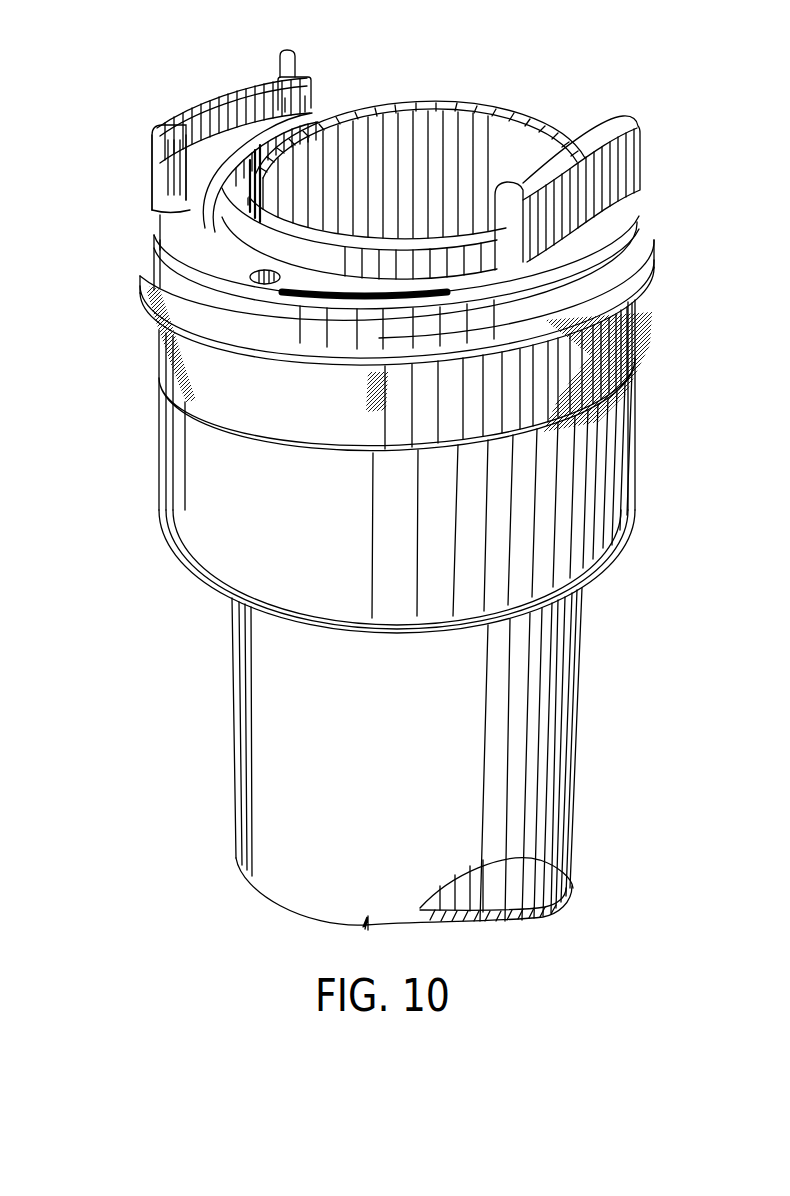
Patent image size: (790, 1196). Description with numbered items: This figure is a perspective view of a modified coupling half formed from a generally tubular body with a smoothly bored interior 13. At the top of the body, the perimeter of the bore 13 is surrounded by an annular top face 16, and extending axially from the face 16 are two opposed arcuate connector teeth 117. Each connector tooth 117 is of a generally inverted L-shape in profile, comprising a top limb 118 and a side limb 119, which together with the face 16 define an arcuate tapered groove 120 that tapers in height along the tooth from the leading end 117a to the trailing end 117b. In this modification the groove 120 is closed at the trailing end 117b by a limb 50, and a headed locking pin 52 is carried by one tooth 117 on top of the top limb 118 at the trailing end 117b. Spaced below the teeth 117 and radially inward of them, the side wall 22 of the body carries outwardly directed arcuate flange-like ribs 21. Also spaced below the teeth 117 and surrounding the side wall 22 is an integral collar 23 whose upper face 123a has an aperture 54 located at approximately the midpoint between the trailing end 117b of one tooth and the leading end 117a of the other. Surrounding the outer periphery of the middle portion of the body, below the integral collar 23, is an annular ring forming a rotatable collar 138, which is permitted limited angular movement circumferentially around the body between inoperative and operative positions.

The bore 13 is at (477, 164).
The annular top face 16 is at (450, 103).
The arcuate flange-like ribs 21 is at (157, 233).
The side wall 22 is at (440, 262).
The integral collar 23 is at (383, 302).
The limb 50 is at (310, 100).
The headed locking pin 52 is at (285, 50).
The aperture 54 is at (142, 310).
The arcuate connector teeth 117 is at (238, 80).
The leading end 117a is at (146, 131).
The trailing end 117b is at (313, 75).
The top limb 118 is at (588, 140).
The side limb 119 is at (513, 233).
The arcuate tapered groove 120 is at (178, 168).
The upper face 123a is at (305, 295).
The rotatable collar 138 is at (642, 354).